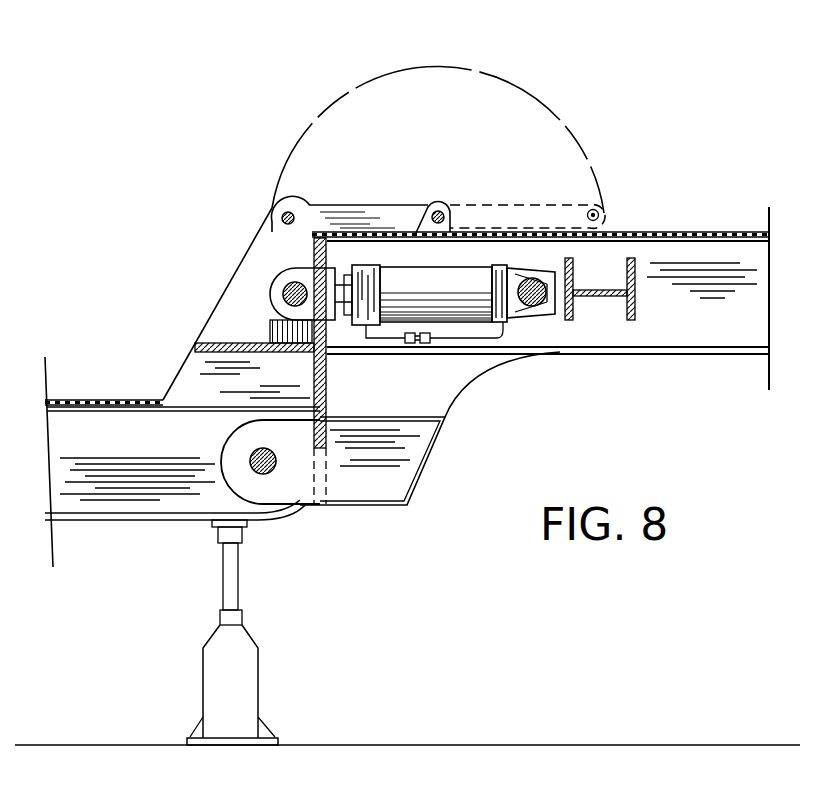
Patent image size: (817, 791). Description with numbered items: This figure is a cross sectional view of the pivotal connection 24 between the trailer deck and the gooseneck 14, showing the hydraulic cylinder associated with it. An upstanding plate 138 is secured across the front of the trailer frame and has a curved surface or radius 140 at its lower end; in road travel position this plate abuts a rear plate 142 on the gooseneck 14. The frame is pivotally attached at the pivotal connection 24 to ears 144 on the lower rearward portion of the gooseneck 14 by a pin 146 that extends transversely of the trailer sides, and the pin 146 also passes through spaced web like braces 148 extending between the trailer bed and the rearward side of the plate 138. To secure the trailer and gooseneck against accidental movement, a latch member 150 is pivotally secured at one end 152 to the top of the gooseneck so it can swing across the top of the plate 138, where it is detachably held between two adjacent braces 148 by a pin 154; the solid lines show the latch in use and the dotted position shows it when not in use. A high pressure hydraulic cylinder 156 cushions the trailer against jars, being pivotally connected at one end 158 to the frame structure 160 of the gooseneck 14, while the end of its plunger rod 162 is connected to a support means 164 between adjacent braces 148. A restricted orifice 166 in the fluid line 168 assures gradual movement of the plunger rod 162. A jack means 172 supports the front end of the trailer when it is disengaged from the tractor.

The gooseneck 14 is at (714, 230).
The pivotal connection 24 is at (208, 444).
The upstanding plate 138 is at (312, 364).
The curved surface or radius 140 is at (298, 508).
The rear plate 142 is at (328, 372).
The ears 144 is at (396, 496).
The pin 146 is at (279, 440).
The web like braces 148 is at (221, 316).
The latch members 150 is at (386, 210).
The pivot end of latch member 152 is at (441, 203).
The pin 154 is at (279, 214).
The hydraulic cylinder 156 is at (438, 282).
The pivotal connection of cylinder 158 is at (549, 326).
The frame structure 160 is at (636, 294).
The plunger rod 162 is at (345, 272).
The support means 164 is at (266, 281).
The restricted orifice 166 is at (430, 345).
The fluid line 168 is at (488, 338).
The jack means 172 is at (240, 667).